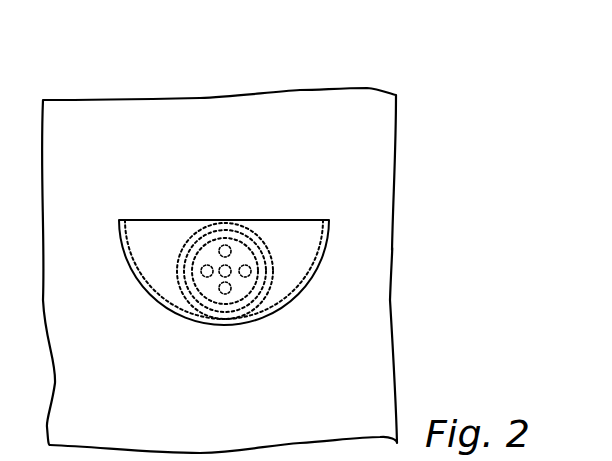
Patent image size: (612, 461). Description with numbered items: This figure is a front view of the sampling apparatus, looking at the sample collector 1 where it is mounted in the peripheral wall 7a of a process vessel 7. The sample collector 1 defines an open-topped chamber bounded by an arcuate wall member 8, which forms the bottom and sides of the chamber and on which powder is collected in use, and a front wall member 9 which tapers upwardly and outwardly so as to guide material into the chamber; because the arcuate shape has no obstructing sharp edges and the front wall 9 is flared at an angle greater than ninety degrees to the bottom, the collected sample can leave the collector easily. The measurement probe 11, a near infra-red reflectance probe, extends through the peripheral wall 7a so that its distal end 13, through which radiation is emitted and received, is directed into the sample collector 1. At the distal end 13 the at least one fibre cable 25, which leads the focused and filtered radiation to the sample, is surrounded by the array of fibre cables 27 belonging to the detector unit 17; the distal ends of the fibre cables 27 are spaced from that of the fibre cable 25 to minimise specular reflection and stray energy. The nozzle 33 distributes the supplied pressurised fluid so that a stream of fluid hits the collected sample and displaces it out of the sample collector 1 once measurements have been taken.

The sample collector 1 is at (218, 279).
The process vessel 7 is at (342, 87).
The peripheral wall 7a is at (250, 120).
The arcuate wall member 8 is at (170, 312).
The front wall member 9 is at (292, 270).
The measurement probe 11 is at (188, 263).
The distal end 13 is at (200, 275).
The detector unit 17 is at (81, 7).
The fibre cable 25 is at (228, 278).
The fibre cables 27 is at (207, 260).
The nozzle 33 is at (270, 247).